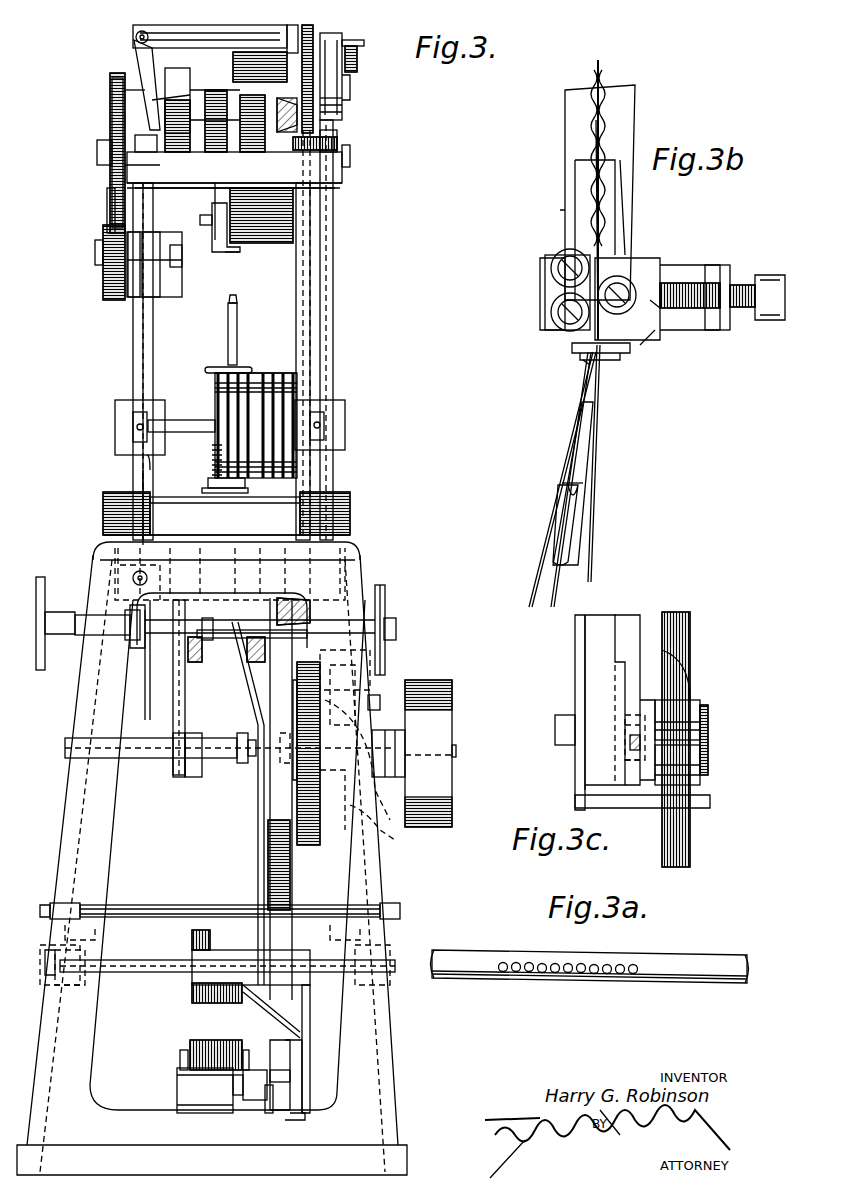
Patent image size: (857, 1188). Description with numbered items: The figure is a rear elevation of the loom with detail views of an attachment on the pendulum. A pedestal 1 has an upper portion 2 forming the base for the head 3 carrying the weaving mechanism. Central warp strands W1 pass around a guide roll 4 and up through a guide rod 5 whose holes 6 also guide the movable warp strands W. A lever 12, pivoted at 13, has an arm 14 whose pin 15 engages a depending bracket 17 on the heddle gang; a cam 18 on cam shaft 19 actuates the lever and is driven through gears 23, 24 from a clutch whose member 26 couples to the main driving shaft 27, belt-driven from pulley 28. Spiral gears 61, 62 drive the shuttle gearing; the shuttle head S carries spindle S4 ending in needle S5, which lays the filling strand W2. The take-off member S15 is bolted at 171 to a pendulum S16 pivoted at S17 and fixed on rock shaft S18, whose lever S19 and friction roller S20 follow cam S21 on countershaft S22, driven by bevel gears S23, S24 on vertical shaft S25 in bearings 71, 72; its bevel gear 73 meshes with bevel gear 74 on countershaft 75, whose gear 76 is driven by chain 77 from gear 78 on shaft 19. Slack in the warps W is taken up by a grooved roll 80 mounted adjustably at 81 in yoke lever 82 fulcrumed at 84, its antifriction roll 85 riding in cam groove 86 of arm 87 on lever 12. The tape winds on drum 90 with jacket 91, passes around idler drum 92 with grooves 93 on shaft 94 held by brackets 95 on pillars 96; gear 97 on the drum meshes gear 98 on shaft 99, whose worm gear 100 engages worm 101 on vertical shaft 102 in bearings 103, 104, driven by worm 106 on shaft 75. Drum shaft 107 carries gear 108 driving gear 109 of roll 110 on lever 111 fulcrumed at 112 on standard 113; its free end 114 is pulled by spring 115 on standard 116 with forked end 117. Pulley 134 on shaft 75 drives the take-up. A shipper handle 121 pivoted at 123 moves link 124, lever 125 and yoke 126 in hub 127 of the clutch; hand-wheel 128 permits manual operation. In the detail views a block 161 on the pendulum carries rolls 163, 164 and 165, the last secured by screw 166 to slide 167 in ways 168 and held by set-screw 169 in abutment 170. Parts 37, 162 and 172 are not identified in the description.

In FIG. 3, the pedestal 1 is at (378, 1050).
In FIG. 3, the upper portion of pedestal 2 is at (352, 553).
In FIG. 3, the head 3 is at (103, 537).
In FIG. 3, the guide roll 4 is at (190, 992).
In FIG. 3, the guide rod 5 is at (135, 905).
In FIG. 3A, the guide rod 5 is at (680, 983).
In FIG. 3, the holes 6 is at (208, 925).
In FIG. 3A, the holes 6 is at (505, 977).
In FIG. 3, the lever 12 is at (250, 932).
In FIG. 3, the pivot 13 is at (45, 948).
In FIG. 3, the arm 14 is at (323, 799).
In FIG. 3, the pin 15 is at (215, 595).
In FIG. 3, the depending bracket 17 is at (230, 578).
In FIG. 3, the cam 18 is at (290, 885).
In FIG. 3, the cam shaft 19 is at (150, 758).
In FIG. 3, the gear 23 is at (305, 845).
In FIG. 3, the gear 24 is at (295, 708).
In FIG. 3, the clutch member 26 is at (357, 778).
In FIG. 3, the main driving shaft 27 is at (456, 752).
In FIG. 3, the driving pulley 28 is at (452, 718).
In FIG. 3, the drum 37 is at (350, 505).
In FIG. 3, the spiral gears 61 is at (240, 648).
In FIG. 3, the spiral gears 62 is at (202, 655).
In FIG. 3, the bearing 71 is at (320, 195).
In FIG. 3, the bearing 72 is at (310, 578).
In FIG. 3, the bevel gear 73 is at (305, 600).
In FIG. 3, the bevel gear 74 is at (310, 612).
In FIG. 3, the countershaft 75 is at (420, 622).
In FIG. 3, the gear 76 is at (150, 660).
In FIG. 3, the chain 77 is at (173, 715).
In FIG. 3, the gear 78 is at (190, 777).
In FIG. 3, the grooved roll 80 is at (195, 1040).
In FIG. 3, the adjustable mounting 81 is at (180, 1058).
In FIG. 3, the yoke lever 82 is at (262, 1068).
In FIG. 3, the fulcrum 84 is at (215, 1105).
In FIG. 3, the antifriction roll 85 is at (270, 1113).
In FIG. 3, the cam groove 86 is at (285, 1075).
In FIG. 3, the arm 87 is at (310, 1018).
In FIG. 3, the drum 90 is at (108, 105).
In FIG. 3, the jacket 91 is at (293, 220).
In FIG. 3, the idler drum 92 is at (290, 382).
In FIG. 3, the peripheral grooves 93 is at (280, 373).
In FIG. 3, the shaft 94 is at (190, 410).
In FIG. 3, the brackets 95 is at (115, 415).
In FIG. 3, the pillars 96 is at (133, 357).
In FIG. 3, the gear 97 is at (110, 115).
In FIG. 3, the gear 98 is at (107, 207).
In FIG. 3, the shaft 99 is at (95, 248).
In FIG. 3, the worm gear 100 is at (165, 297).
In FIG. 3, the worm 101 is at (160, 235).
In FIG. 3, the vertical shaft 102 is at (153, 327).
In FIG. 3, the bearing 103 is at (127, 172).
In FIG. 3, the bearing 104 is at (200, 572).
In FIG. 3, the worm 106 is at (120, 655).
In FIG. 3, the drum shaft 107 is at (95, 152).
In FIG. 3, the gear 108 is at (313, 78).
In FIG. 3, the gear 109 is at (330, 33).
In FIG. 3, the roll 110 is at (292, 22).
In FIG. 3, the swinging lever 111 is at (225, 55).
In FIG. 3, the fulcrum 112 is at (136, 37).
In FIG. 3, the standard 113 is at (135, 60).
In FIG. 3, the free end 114 is at (364, 43).
In FIG. 3, the spring 115 is at (350, 100).
In FIG. 3, the standard 116 is at (320, 125).
In FIG. 3, the forked upper end 117 is at (357, 62).
In FIG. 3, the shipper handle 121 is at (140, 482).
In FIG. 3, the pivot 123 is at (130, 595).
In FIG. 3, the adjustable link 124 is at (385, 660).
In FIG. 3, the lever 125 is at (380, 676).
In FIG. 3, the yoke 126 is at (389, 825).
In FIG. 3, the hub 127 is at (340, 802).
In FIG. 3, the hand-wheel 128 is at (48, 638).
In FIG. 3, the pulley 134 is at (385, 600).
In FIG. 3B, the block 161 is at (680, 267).
In FIG. 3B, the block 162 is at (545, 295).
In FIG. 3C, the block 162 is at (620, 765).
In FIG. 3B, the roll 163 is at (551, 268).
In FIG. 3C, the roll 163 is at (700, 705).
In FIG. 3B, the roll 164 is at (553, 315).
In FIG. 3C, the roll 164 is at (700, 775).
In FIG. 3B, the roll 165 is at (618, 372).
In FIG. 3B, the screw 166 is at (617, 283).
In FIG. 3C, the screw 166 is at (708, 740).
In FIG. 3B, the slide 167 is at (700, 310).
In FIG. 3C, the slide 167 is at (620, 720).
In FIG. 3B, the ways 168 is at (669, 324).
In FIG. 3C, the ways 168 is at (650, 697).
In FIG. 3B, the set-screw 169 is at (745, 270).
In FIG. 3B, the abutment 170 is at (740, 330).
In FIG. 3, the screw 171 is at (198, 220).
In FIG. 3C, the screw 171 is at (555, 720).
In FIG. 3B, the plate 172 is at (610, 180).
In FIG. 3C, the plate 172 is at (575, 765).
In FIG. 3, the shuttle head S is at (205, 480).
In FIG. 3, the spindle S4 is at (237, 327).
In FIG. 3B, the spindle S4 is at (570, 525).
In FIG. 3, the needle S5 is at (237, 300).
In FIG. 3B, the needle S5 is at (580, 425).
In FIG. 3, the take-off member S15 is at (238, 252).
In FIG. 3B, the take-off member S15 is at (565, 220).
In FIG. 3C, the take-off member S15 is at (666, 796).
In FIG. 3, the pendulum S16 is at (218, 235).
In FIG. 3B, the pendulum S16 is at (575, 130).
In FIG. 3C, the pendulum S16 is at (580, 630).
In FIG. 3, the pivot S17 is at (112, 84).
In FIG. 3, the rock shaft S18 is at (161, 98).
In FIG. 3, the lever S19 is at (195, 75).
In FIG. 3, the friction roller S20 is at (260, 125).
In FIG. 3, the cam S21 is at (230, 165).
In FIG. 3, the countershaft S22 is at (234, 161).
In FIG. 3, the bevel gear S23 is at (345, 120).
In FIG. 3, the bevel gear S24 is at (337, 150).
In FIG. 3, the vertical shaft S25 is at (310, 270).
In FIG. 3B, the movable warp strands W is at (560, 455).
In FIG. 3B, the central warp strands W1 is at (596, 140).
In FIG. 3B, the wire tape W2 is at (600, 60).
In FIG. 3C, the wire tape W2 is at (690, 640).